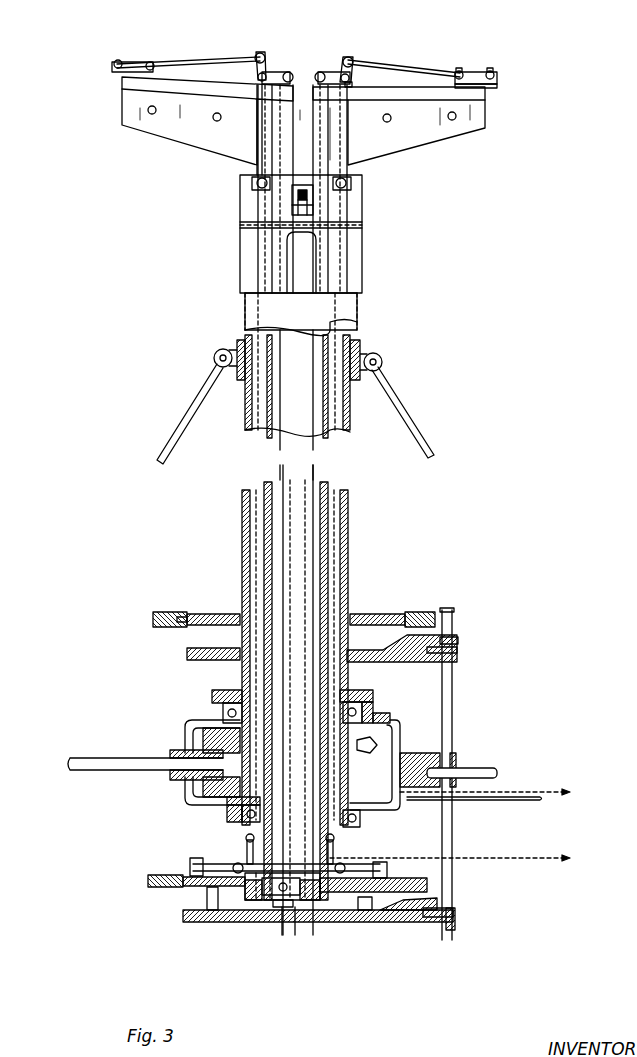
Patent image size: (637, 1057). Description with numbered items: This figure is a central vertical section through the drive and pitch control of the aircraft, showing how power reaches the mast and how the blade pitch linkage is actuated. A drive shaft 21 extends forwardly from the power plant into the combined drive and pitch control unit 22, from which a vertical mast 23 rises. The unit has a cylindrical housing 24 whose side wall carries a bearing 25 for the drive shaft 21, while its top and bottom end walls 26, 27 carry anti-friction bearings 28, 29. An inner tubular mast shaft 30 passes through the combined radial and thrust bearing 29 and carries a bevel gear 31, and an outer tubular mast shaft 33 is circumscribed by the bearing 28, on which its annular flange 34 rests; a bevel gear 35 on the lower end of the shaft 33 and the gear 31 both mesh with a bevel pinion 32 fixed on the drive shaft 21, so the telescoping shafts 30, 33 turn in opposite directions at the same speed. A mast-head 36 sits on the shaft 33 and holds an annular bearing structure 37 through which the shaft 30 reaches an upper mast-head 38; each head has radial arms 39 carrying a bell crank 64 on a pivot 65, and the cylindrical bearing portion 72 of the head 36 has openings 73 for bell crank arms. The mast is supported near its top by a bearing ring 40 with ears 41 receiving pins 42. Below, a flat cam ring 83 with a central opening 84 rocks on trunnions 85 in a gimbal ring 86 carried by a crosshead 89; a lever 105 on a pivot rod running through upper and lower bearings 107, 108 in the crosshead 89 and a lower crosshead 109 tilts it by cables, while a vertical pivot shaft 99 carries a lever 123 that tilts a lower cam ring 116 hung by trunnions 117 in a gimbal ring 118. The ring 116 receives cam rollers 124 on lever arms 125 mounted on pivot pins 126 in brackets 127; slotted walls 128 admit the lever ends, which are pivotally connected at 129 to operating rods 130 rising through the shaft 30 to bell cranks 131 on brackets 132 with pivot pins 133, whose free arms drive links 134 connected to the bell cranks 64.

The drive shaft 21 is at (115, 770).
The combined drive and pitch control unit 22 is at (146, 672).
The vertical mast 23 is at (228, 315).
The housing 24 is at (185, 797).
The bearing 25 is at (175, 752).
The top end wall 26 is at (390, 725).
The bottom end wall 27 is at (392, 810).
The upper bearing 28 is at (224, 710).
The lower bearing 29 is at (243, 815).
The inner tubular mast shaft 30 is at (329, 520).
The bevel gear 31 is at (230, 812).
The bevel pinion 32 is at (210, 740).
The outer tubular mast shaft 33 is at (349, 552).
The annular flange 34 is at (225, 692).
The bevel gear 35 is at (378, 745).
The mast-head 36 is at (362, 275).
The annular bearing structure 37 is at (350, 183).
The upper mast-head 38 is at (255, 138).
The radial arms 39 is at (178, 123).
The bearing ring 40 is at (360, 345).
The ears 41 is at (383, 358).
The pins 42 is at (380, 368).
The bell crank 64 is at (487, 85).
The pivot 65 is at (478, 74).
The cylindrical bearing portion 72 is at (248, 200).
The openings 73 is at (287, 203).
The cam ring 83 is at (375, 614).
The central opening 84 is at (230, 614).
The trunnions 85 is at (170, 612).
The gimbal ring 86 is at (430, 635).
The crosshead 89 is at (385, 660).
The vertical pivot shaft 99 is at (453, 700).
The lever 105 is at (457, 650).
The upper bearing 107 is at (458, 642).
The lower bearing 108 is at (455, 925).
The lower crosshead 109 is at (420, 918).
The cam ring 116 is at (200, 890).
The trunnions 117 is at (183, 888).
The gimbal ring 118 is at (148, 882).
The lever 123 is at (455, 912).
The cam rollers 124 is at (197, 866).
The lever arms 125 is at (362, 868).
The pivot pins 126 is at (330, 880).
The brackets 127 is at (310, 900).
The slotted walls 128 is at (256, 900).
The pivotal connection 129 is at (270, 900).
The operating rods 130 is at (280, 470).
The bell cranks 131 is at (262, 60).
The brackets 132 is at (352, 82).
The pivot pins 133 is at (262, 76).
The links 134 is at (418, 68).